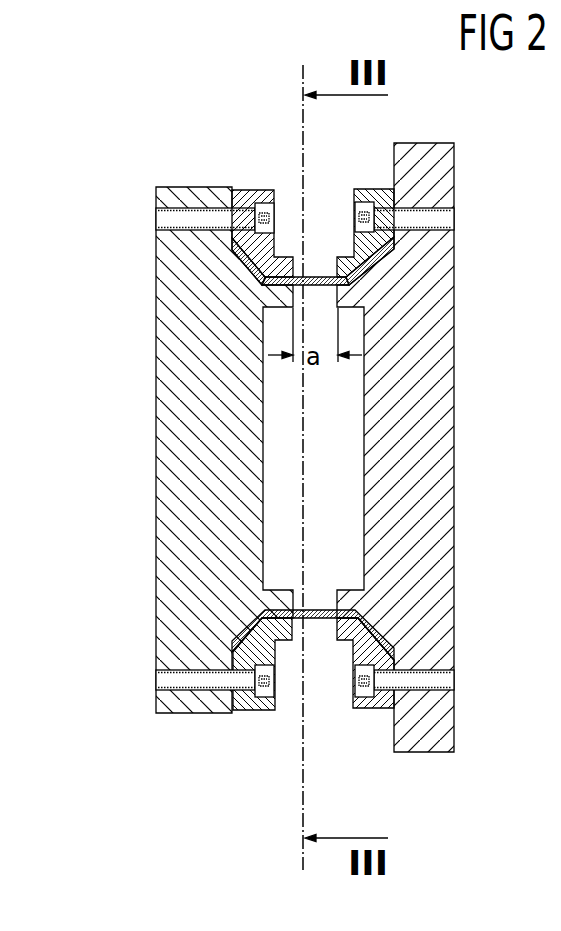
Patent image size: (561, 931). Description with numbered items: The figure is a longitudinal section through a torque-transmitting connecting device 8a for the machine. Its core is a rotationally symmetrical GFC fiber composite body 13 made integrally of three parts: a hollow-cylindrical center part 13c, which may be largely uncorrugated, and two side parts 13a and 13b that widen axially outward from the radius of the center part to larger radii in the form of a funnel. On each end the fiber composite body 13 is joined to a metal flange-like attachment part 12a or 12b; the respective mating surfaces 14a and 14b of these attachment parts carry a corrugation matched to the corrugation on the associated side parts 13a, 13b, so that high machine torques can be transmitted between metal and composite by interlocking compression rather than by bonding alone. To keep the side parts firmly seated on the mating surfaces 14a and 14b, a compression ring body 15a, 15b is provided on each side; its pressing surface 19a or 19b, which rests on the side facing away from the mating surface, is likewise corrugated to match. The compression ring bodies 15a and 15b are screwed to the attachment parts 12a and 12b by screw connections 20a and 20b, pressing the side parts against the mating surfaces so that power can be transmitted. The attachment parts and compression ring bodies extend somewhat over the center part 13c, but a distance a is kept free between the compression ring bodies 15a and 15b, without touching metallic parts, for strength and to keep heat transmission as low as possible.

The coupling half 8a is at (476, 840).
The attachment part 12a is at (455, 165).
The attachment part 12b is at (193, 186).
The fiber composite body 13 is at (313, 407).
The side part 13a is at (387, 258).
The side part 13b is at (252, 258).
The center part 13c is at (314, 274).
The mating surface 14a is at (386, 263).
The mating surface 14b is at (262, 285).
The compression ring body 15a is at (370, 710).
The compression ring body 15b is at (247, 705).
The pressing surface 19a is at (353, 655).
The pressing surface 19b is at (278, 660).
The screw connection 20a is at (418, 685).
The screw connection 20b is at (187, 707).